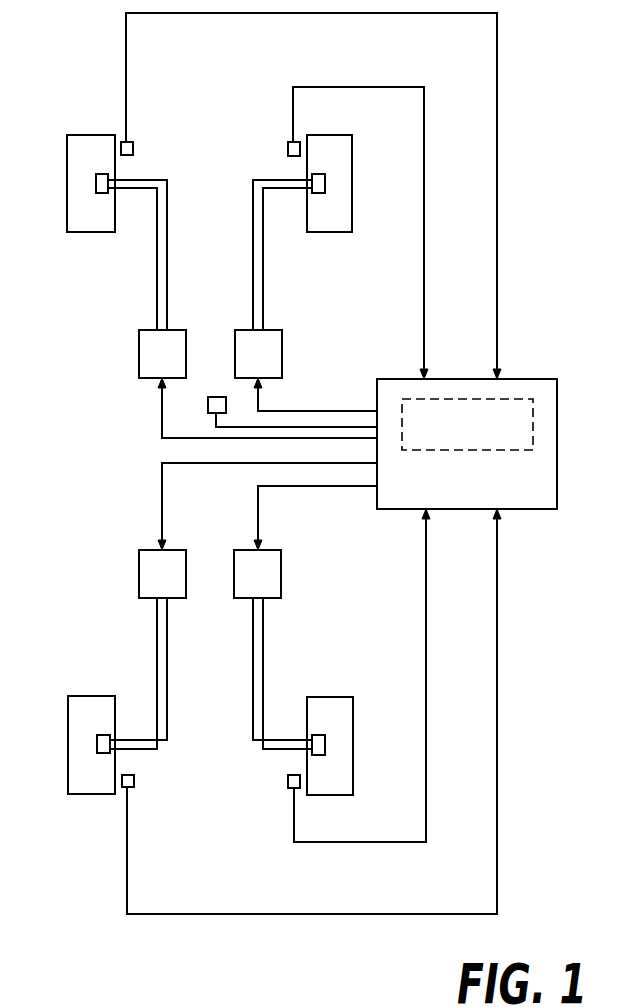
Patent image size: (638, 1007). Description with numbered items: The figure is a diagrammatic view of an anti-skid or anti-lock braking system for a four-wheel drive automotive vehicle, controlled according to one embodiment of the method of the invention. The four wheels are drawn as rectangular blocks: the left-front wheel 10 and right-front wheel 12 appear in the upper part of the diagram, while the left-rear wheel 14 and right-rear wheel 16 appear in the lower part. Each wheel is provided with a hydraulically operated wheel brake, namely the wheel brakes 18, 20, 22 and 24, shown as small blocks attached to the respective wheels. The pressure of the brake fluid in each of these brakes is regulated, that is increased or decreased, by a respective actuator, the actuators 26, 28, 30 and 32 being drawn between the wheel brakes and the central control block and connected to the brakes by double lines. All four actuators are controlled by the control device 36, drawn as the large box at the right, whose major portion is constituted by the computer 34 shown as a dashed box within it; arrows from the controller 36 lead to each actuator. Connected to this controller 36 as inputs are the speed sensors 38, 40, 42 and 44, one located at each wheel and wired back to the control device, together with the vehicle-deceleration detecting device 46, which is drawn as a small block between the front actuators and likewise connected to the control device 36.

The left-front wheel 10 is at (83, 228).
The right-front wheel 12 is at (327, 228).
The left-rear wheel 14 is at (92, 700).
The right-rear wheel 16 is at (331, 700).
The wheel brake 18 is at (96, 183).
The wheel brake 20 is at (325, 183).
The wheel brake 22 is at (97, 741).
The wheel brake 24 is at (325, 745).
The actuator 26 is at (147, 355).
The actuator 28 is at (272, 357).
The actuator 30 is at (146, 573).
The actuator 32 is at (270, 573).
The computer 34 is at (534, 417).
The control device 36 is at (542, 466).
The speed sensor 38 is at (133, 147).
The speed sensor 40 is at (288, 152).
The speed sensor 42 is at (136, 783).
The speed sensor 44 is at (288, 781).
The vehicle-deceleration detecting device 46 is at (216, 398).